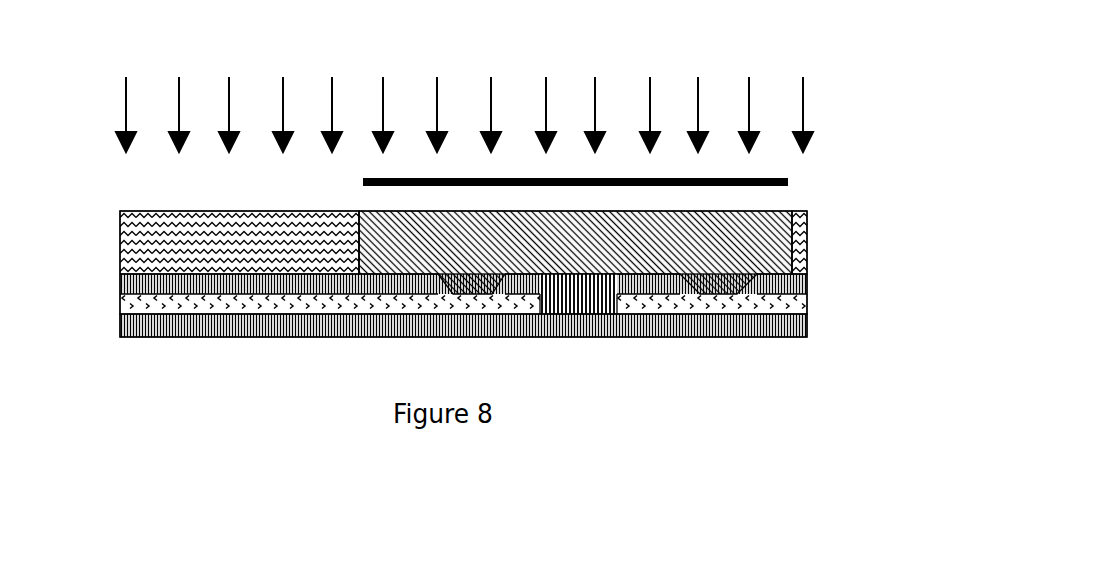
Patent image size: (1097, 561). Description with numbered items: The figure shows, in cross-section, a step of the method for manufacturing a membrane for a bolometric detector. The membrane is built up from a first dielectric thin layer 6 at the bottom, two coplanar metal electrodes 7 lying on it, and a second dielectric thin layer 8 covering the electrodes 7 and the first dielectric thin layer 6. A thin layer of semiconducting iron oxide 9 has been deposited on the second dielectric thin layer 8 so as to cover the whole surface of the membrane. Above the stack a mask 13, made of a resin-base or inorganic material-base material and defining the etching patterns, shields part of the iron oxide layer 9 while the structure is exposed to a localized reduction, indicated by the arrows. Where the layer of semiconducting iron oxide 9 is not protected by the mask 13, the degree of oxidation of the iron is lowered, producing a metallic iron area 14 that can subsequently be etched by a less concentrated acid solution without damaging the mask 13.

The first dielectric thin layer 6 is at (130, 328).
The coplanar electrodes 7 is at (787, 298).
The second dielectric thin layer 8 is at (133, 287).
The thin layer of semiconducting iron oxide 9 is at (563, 238).
The mask 13 is at (717, 178).
The metallic iron area 14 is at (163, 240).